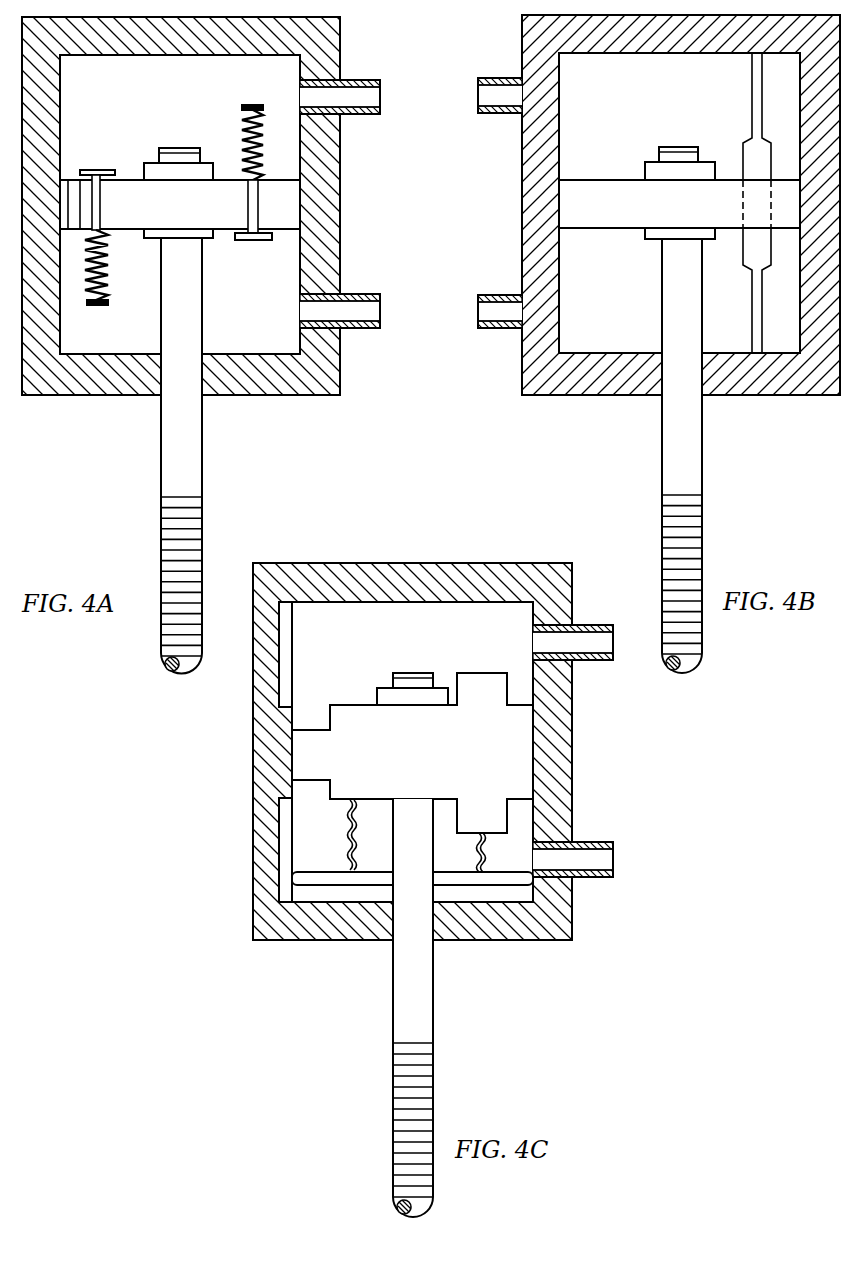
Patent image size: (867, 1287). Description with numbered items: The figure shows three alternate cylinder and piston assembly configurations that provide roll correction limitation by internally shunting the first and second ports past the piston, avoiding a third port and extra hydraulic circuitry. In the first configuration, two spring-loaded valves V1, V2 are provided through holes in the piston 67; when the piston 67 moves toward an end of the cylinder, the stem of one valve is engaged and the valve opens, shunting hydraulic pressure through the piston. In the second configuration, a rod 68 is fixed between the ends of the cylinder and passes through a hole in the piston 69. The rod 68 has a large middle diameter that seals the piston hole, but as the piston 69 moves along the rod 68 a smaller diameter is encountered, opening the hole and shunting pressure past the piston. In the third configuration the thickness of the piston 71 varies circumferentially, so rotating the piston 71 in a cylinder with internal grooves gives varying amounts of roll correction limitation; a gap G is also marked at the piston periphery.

In FIG. 4A, the piston 67 is at (122, 231).
In FIG. 4A, the spring-loaded valve V1 is at (86, 170).
In FIG. 4A, the spring-loaded valve V2 is at (253, 242).
In FIG. 4B, the rod 68 is at (592, 229).
In FIG. 4B, the piston 69 is at (749, 138).
In FIG. 4C, the gap between piston and housing G is at (283, 636).
In FIG. 4C, the piston 71 is at (492, 672).